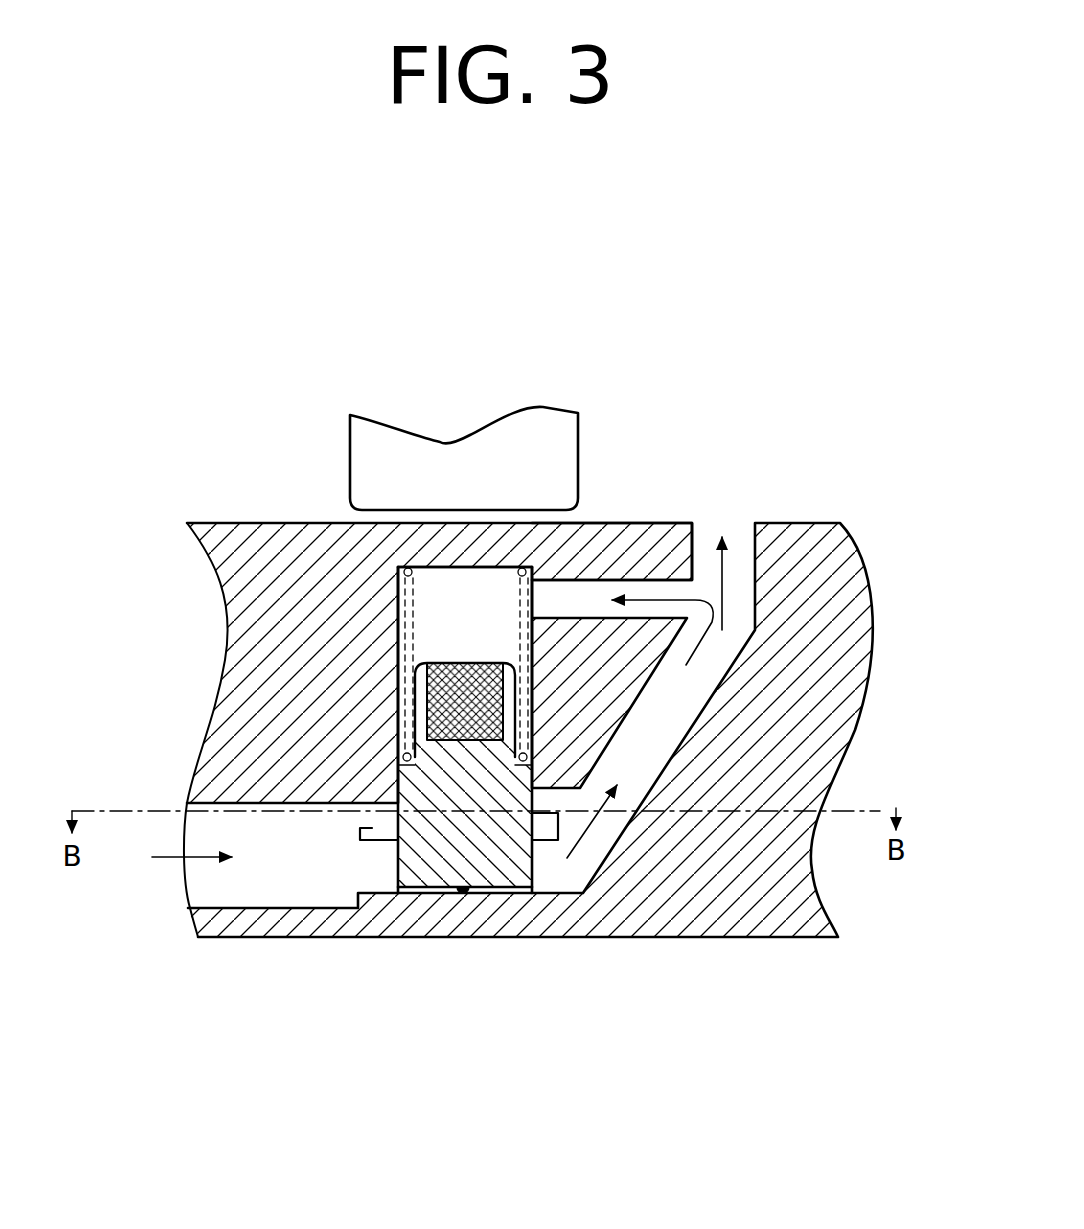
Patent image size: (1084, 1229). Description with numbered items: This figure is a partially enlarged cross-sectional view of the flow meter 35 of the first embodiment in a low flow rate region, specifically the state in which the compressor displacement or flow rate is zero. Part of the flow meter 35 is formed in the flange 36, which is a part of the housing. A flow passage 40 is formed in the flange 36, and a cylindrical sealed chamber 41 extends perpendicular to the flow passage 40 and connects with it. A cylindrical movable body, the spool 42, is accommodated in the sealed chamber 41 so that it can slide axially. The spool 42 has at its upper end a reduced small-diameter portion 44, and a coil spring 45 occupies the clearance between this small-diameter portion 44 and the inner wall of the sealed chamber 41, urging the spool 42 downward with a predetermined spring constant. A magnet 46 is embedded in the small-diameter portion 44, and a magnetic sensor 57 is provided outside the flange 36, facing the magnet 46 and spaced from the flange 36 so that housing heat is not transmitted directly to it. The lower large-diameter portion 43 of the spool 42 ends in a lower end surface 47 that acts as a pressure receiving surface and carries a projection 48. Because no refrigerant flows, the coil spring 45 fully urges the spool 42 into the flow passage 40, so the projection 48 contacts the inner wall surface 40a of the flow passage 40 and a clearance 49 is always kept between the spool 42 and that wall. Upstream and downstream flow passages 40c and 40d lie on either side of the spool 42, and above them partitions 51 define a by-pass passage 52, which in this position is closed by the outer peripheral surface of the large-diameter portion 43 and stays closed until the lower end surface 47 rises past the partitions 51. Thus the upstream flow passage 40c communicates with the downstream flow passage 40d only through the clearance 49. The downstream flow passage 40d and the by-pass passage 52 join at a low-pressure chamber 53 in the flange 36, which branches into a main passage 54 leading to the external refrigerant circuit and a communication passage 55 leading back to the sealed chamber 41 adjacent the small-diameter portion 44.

The flow meter 35 is at (275, 412).
The flange 36 is at (243, 572).
The flow passage 40 is at (332, 870).
The inner wall surface of the flow passage 40a is at (385, 870).
The upstream flow passage 40c is at (353, 872).
The downstream flow passage 40d is at (553, 870).
The sealed chamber 41 is at (480, 627).
The spool 42 is at (437, 880).
The lower large-diameter portion 43 is at (357, 865).
The small-diameter portion 44 is at (415, 685).
The coil spring 45 is at (398, 567).
The magnet 46 is at (505, 700).
The lower end surface 47 is at (428, 852).
The projection 48 is at (463, 892).
The clearance 49 is at (497, 888).
The partitions 51 is at (385, 818).
The by-pass passage 52 is at (393, 795).
The low-pressure chamber 53 is at (707, 677).
The main passage 54 is at (737, 540).
The communication passage 55 is at (646, 588).
The magnetic sensor 57 is at (423, 453).